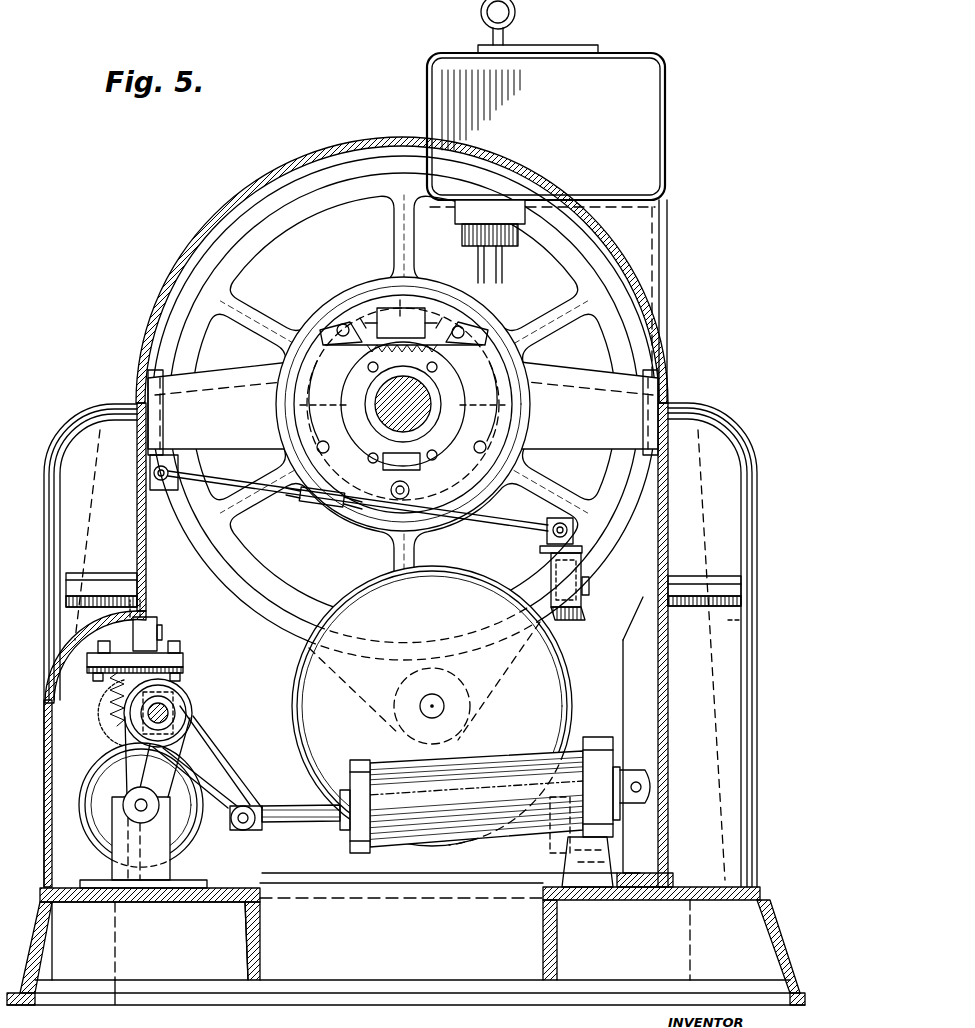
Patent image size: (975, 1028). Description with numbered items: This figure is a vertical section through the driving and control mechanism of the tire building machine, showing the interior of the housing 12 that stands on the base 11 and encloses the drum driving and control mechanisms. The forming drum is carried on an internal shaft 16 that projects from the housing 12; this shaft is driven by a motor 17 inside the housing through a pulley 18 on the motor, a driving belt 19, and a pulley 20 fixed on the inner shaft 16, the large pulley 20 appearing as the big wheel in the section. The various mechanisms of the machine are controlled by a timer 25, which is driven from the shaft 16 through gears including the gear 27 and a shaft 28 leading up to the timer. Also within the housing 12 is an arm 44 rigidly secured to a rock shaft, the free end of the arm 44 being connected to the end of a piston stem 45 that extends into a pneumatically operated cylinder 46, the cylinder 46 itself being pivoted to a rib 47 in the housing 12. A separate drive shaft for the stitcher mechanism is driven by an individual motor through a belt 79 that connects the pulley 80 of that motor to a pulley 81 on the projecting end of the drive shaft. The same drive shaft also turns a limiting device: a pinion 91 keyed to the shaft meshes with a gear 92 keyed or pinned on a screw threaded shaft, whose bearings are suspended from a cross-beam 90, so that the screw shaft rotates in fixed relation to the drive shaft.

The base 11 is at (262, 918).
The housing 12 is at (341, 140).
The internal shaft 16 is at (404, 400).
The motor 17 is at (358, 582).
The pulley 18 is at (412, 722).
The driving belt 19 is at (296, 636).
The pulley 20 is at (208, 542).
The timer 25 is at (432, 62).
The gear 27 is at (528, 397).
The shaft 28 is at (505, 272).
The arm 44 is at (234, 830).
The piston stem 45 is at (310, 830).
The pneumatically operated cylinder 46 is at (480, 762).
The rib 47 is at (658, 598).
The belt 79 is at (124, 766).
The pulley 80 is at (123, 807).
The pulley 81 is at (124, 713).
The cross-beam 90 is at (145, 632).
The pinion 91 is at (152, 745).
The gear 92 is at (112, 692).